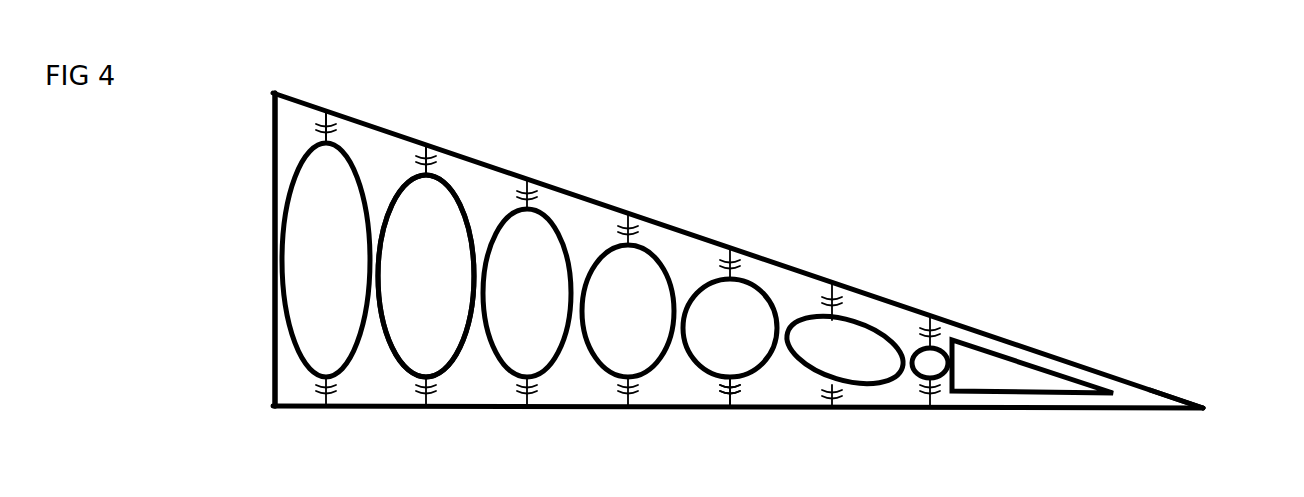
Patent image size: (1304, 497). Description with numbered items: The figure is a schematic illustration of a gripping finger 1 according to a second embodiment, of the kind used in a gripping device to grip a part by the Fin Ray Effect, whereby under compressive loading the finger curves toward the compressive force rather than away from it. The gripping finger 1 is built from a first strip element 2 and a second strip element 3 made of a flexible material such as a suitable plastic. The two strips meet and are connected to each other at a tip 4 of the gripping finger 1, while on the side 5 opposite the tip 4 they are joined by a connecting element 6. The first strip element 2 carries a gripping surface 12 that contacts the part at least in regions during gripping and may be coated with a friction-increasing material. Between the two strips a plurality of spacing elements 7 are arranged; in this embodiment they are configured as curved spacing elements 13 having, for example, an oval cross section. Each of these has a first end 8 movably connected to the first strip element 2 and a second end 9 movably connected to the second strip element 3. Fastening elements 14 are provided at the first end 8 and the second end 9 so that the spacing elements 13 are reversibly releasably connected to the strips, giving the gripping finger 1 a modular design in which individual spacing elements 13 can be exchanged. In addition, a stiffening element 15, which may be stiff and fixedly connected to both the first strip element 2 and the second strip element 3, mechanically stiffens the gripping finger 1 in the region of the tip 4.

The gripping finger 1 is at (725, 288).
The first strip element 2 is at (415, 408).
The second strip element 3 is at (697, 236).
The tip 4 is at (1211, 386).
The side 5 is at (238, 256).
The connecting element 6 is at (273, 322).
The spacing elements 7 is at (476, 190).
The first end 8 is at (332, 424).
The second end 9 is at (333, 100).
The gripping surface 12 is at (728, 425).
The curved spacing elements 13 is at (363, 218).
The fastening elements 14 is at (320, 118).
The stiffening element 15 is at (1030, 363).